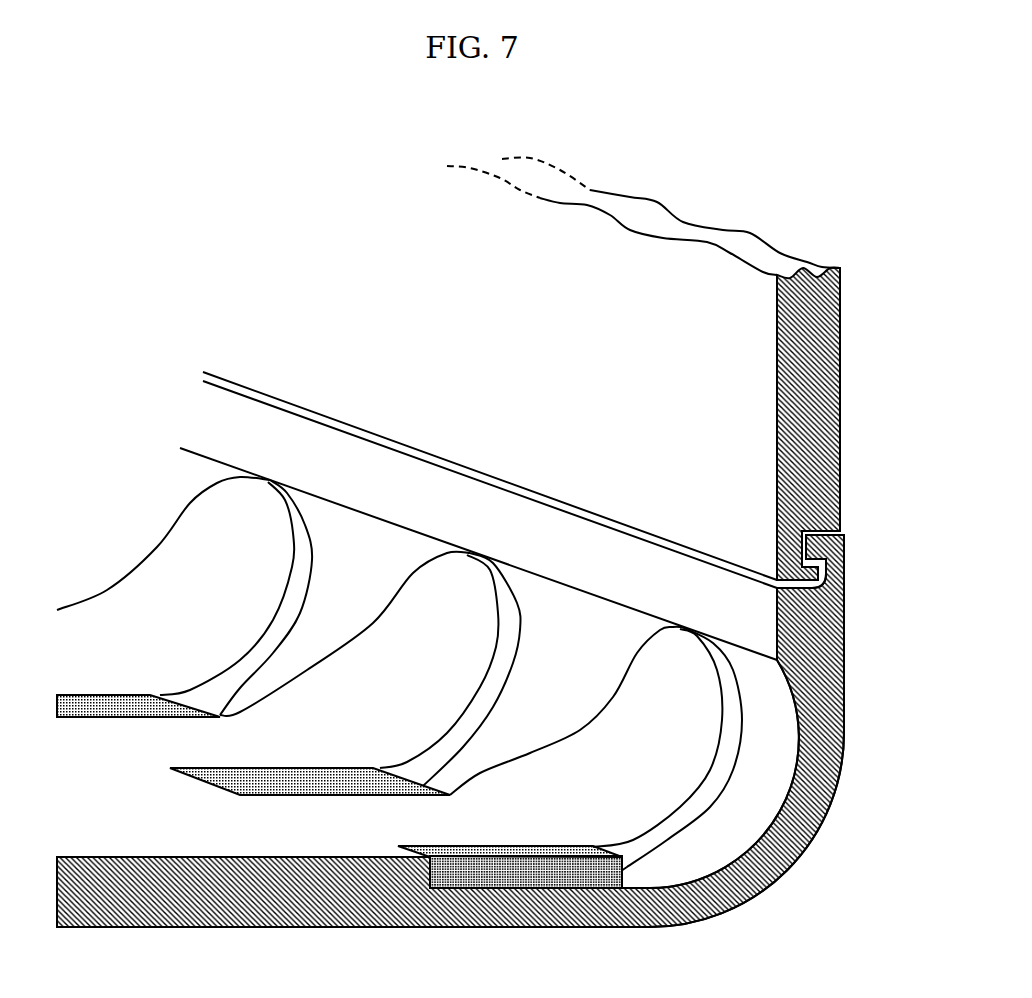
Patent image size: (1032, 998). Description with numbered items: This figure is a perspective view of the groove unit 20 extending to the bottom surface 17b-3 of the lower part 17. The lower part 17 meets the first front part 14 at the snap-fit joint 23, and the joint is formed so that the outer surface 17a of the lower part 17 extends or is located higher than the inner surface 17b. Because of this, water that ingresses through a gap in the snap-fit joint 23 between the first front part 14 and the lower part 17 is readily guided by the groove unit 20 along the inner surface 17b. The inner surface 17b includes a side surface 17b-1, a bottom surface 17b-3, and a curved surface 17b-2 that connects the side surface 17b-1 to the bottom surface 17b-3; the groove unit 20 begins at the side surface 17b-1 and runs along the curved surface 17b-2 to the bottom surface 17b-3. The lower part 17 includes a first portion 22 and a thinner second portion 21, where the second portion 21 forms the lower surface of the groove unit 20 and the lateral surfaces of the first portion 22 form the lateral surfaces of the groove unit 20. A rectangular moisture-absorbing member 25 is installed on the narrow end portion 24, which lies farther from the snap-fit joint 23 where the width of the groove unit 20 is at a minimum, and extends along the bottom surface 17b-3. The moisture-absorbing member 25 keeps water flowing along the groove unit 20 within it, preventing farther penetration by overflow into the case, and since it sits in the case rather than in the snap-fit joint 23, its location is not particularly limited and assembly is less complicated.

The first front part 14 is at (840, 373).
The lower part 17 is at (846, 694).
The outer surface of the lower part 17a is at (845, 573).
The inner surface of the lower part 17b is at (775, 597).
The side surface 17b-1 is at (652, 588).
The curved surface 17b-2 is at (637, 750).
The bottom surface 17b-3 is at (345, 817).
The groove unit 20 is at (720, 718).
The second portion 21 is at (835, 785).
The first portion 22 is at (627, 667).
The snap-fit joint 23 is at (840, 530).
The narrow end portion 24 is at (477, 860).
The moisture-absorbing member 25 is at (510, 848).